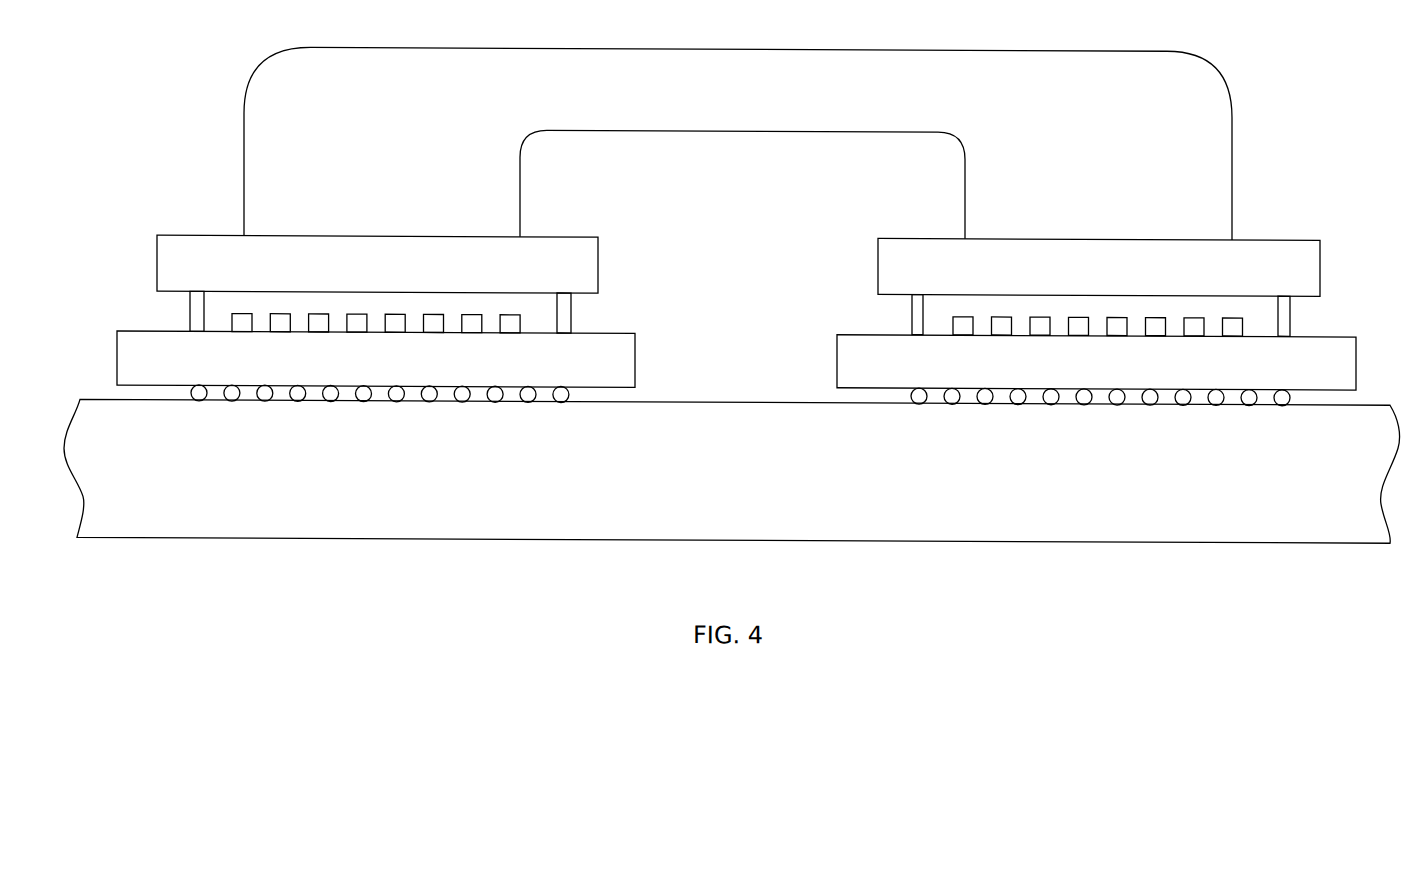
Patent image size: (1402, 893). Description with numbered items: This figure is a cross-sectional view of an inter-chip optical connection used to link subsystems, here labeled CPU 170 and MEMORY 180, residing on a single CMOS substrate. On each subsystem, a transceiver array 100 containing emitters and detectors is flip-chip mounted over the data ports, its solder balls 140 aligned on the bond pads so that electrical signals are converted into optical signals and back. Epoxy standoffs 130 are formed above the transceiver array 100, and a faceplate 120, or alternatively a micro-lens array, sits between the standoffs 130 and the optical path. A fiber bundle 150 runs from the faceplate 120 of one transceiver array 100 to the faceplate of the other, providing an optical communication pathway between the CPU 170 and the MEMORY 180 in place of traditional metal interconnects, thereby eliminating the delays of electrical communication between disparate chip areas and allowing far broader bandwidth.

The transceiver array 100 is at (1292, 321).
The face-plate 120 is at (1192, 234).
The standoff 130 is at (908, 308).
The solder ball 140 is at (193, 400).
The fiber bundle 150 is at (256, 110).
The CPU package 170 is at (376, 350).
The memory package 180 is at (1086, 311).